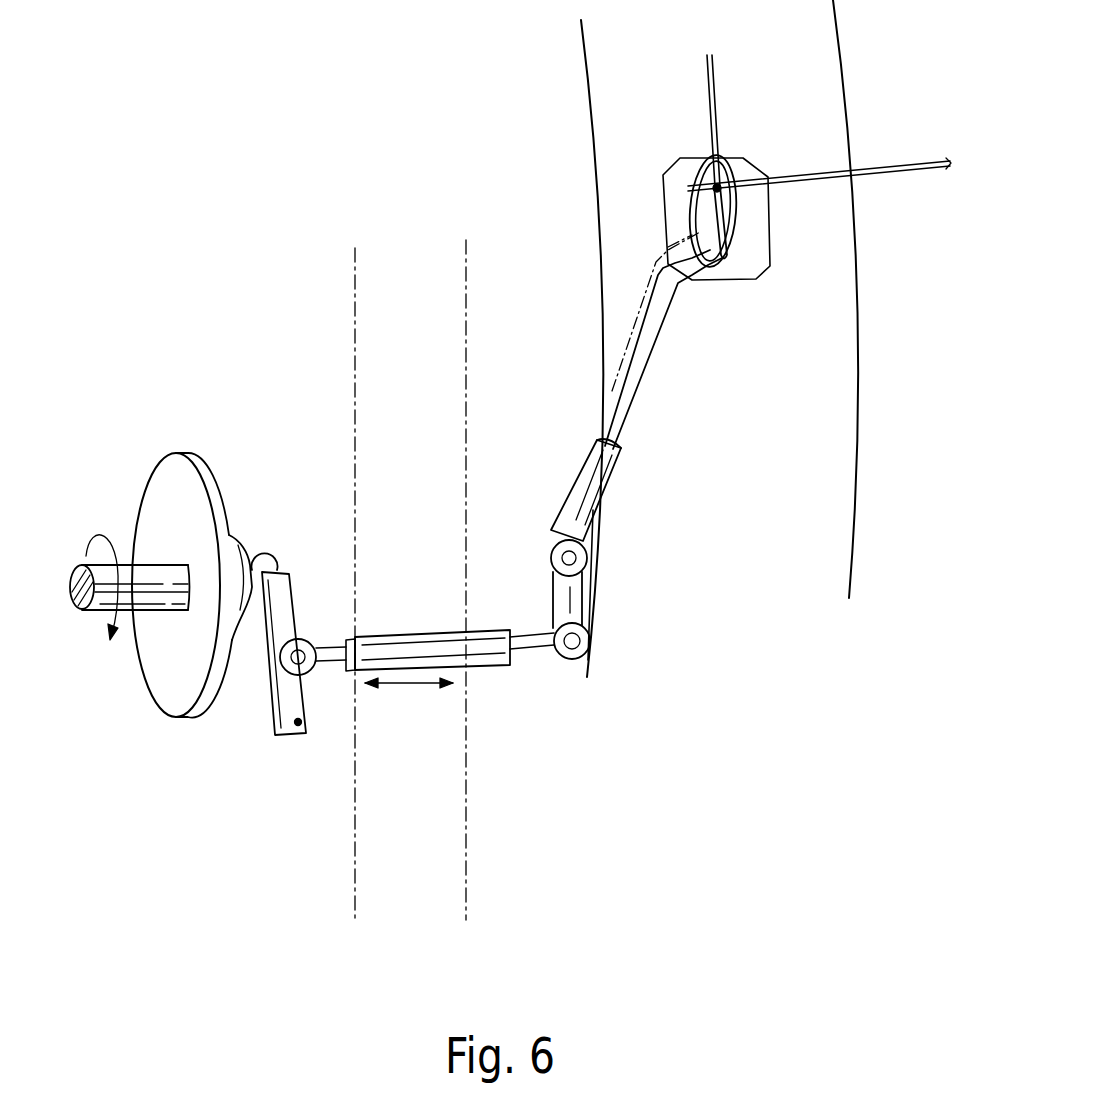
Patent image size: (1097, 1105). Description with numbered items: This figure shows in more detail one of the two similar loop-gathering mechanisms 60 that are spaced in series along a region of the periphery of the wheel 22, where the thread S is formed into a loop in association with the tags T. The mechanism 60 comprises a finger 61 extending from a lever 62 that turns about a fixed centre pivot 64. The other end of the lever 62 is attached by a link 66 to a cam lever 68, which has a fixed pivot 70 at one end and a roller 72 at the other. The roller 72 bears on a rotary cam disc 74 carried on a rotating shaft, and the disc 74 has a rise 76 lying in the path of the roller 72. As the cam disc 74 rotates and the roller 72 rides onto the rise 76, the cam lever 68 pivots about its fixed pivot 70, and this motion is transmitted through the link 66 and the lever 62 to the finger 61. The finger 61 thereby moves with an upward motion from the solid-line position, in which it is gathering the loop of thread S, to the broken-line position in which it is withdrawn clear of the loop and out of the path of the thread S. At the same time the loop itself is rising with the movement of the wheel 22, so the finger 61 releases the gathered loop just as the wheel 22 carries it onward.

The wheel 22 is at (832, 495).
The thread S is at (717, 118).
The tag T is at (753, 257).
The mechanism 60 is at (612, 620).
The finger 61 is at (652, 345).
The lever 62 is at (597, 488).
The centre pivot 64 is at (576, 558).
The link 66 is at (520, 654).
The cam lever 68 is at (290, 700).
The pivot 70 is at (299, 726).
The roller 72 is at (274, 562).
The rotary cam disc 74 is at (160, 478).
The rise 76 is at (243, 575).